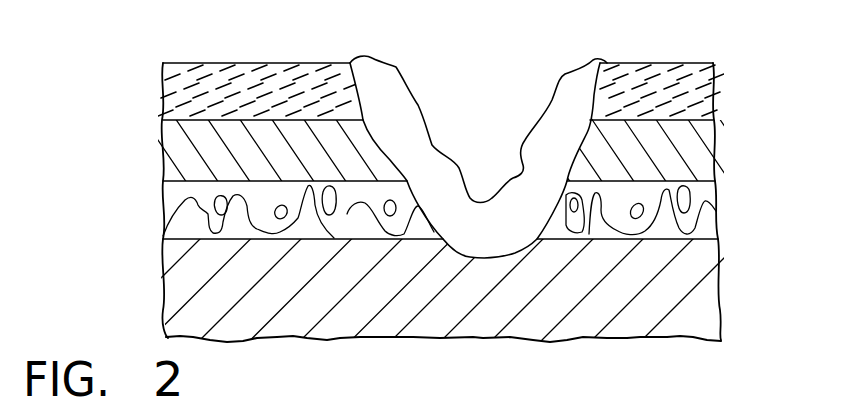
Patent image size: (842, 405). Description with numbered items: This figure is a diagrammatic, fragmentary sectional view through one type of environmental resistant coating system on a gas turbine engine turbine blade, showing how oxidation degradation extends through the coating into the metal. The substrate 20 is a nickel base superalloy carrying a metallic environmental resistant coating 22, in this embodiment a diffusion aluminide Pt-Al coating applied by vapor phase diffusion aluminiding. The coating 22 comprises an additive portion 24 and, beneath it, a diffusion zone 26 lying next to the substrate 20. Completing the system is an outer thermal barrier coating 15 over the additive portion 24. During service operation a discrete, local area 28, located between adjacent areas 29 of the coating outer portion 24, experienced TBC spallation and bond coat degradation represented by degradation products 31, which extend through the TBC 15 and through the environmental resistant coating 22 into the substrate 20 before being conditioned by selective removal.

The thermal barrier coating 15 is at (702, 80).
The substrate 20 is at (700, 303).
The metallic environmental resistant coating 22 is at (130, 184).
The additive portion 24 is at (705, 132).
The diffusion zone 26 is at (700, 202).
The discrete local area 28 is at (483, 56).
The adjacent areas 29 is at (250, 62).
The degradation products 31 is at (565, 105).